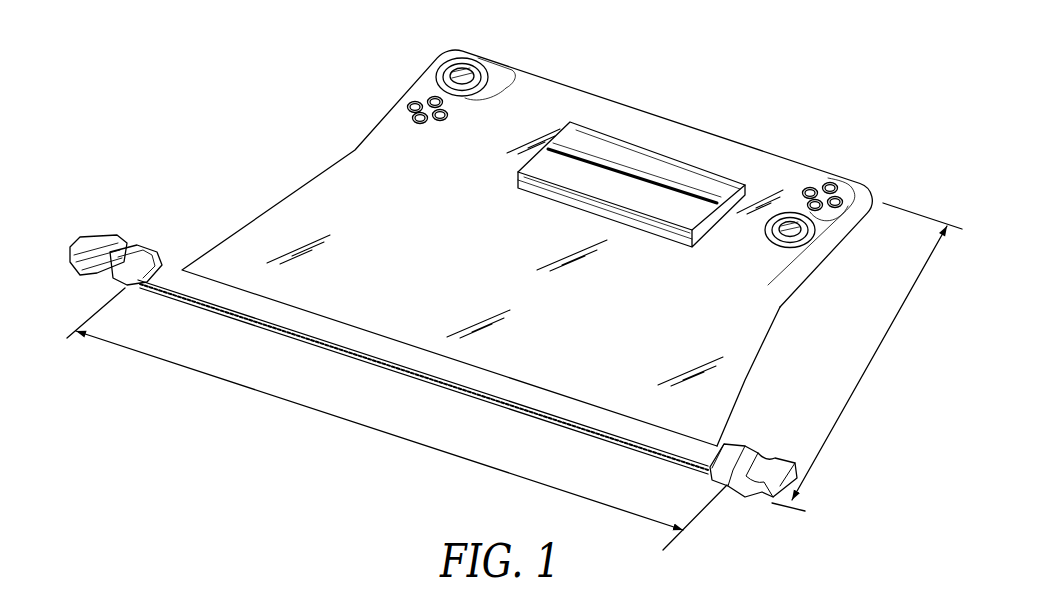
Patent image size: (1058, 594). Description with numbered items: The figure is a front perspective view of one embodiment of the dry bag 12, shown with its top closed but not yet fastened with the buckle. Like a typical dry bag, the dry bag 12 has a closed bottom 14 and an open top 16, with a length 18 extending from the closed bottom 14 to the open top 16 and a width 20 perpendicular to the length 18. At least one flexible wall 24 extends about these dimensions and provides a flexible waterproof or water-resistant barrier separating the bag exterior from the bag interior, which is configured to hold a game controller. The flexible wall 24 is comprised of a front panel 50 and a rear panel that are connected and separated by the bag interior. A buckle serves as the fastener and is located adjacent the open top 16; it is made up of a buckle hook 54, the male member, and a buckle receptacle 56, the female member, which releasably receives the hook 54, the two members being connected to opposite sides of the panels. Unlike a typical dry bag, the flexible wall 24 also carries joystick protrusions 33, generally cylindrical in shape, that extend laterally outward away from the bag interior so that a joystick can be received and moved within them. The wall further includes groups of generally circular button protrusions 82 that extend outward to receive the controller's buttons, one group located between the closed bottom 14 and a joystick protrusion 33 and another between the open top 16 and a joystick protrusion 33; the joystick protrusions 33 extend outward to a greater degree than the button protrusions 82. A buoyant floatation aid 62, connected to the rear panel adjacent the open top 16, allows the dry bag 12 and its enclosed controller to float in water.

The dry bag 12 is at (614, 44).
The closed bottom 14 is at (738, 137).
The open top 16 is at (479, 403).
The length 18 is at (855, 388).
The width 20 is at (195, 371).
The flexible wall 24 is at (363, 187).
The joystick protrusion 33 is at (461, 70).
The front panel 50 is at (760, 307).
The buckle hook 54 is at (107, 228).
The buckle receptacle 56 is at (742, 496).
The floatation aid 62 is at (651, 173).
The button protrusions 82 is at (414, 101).